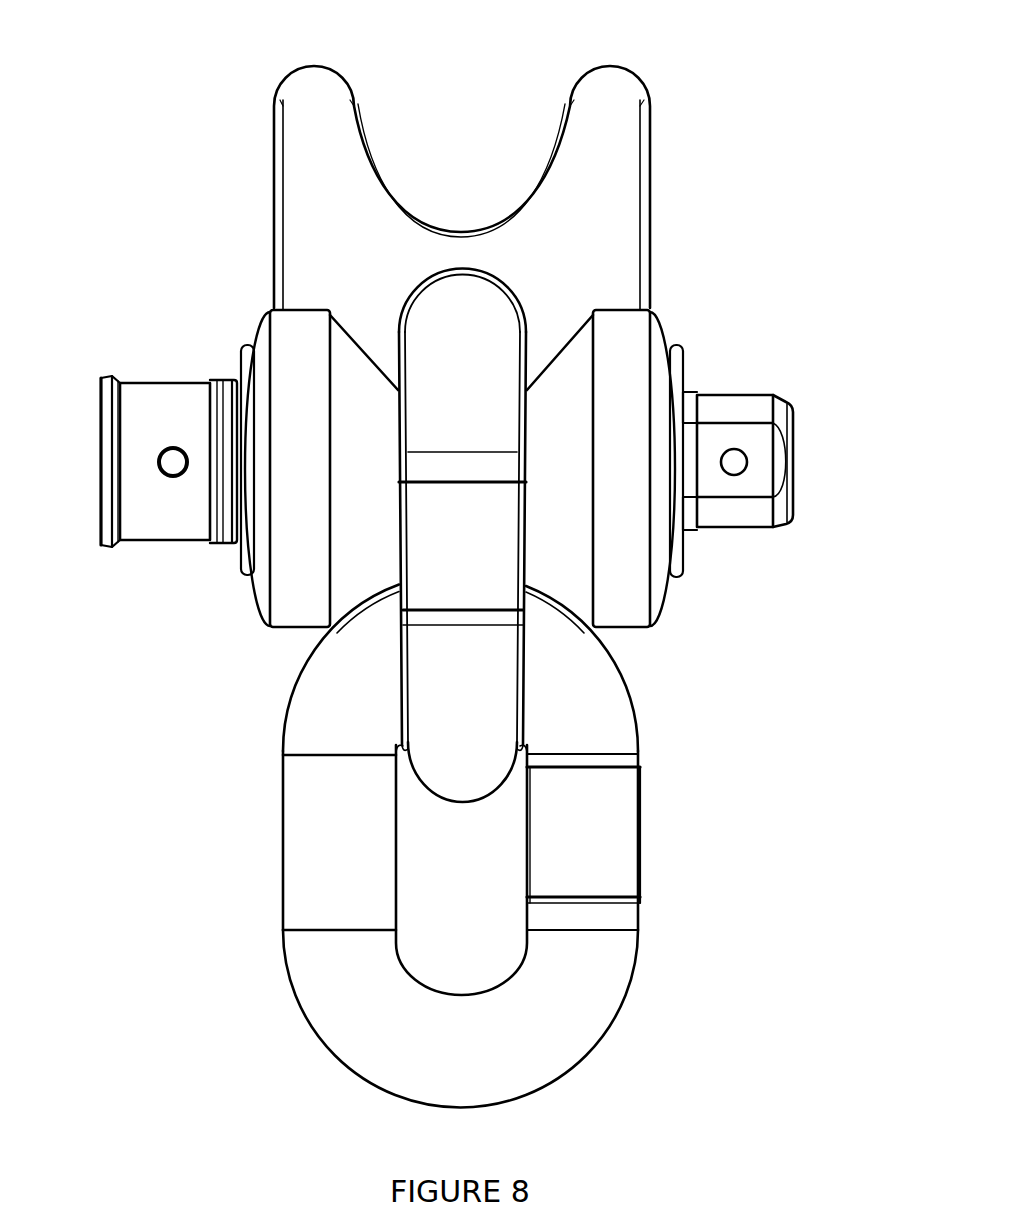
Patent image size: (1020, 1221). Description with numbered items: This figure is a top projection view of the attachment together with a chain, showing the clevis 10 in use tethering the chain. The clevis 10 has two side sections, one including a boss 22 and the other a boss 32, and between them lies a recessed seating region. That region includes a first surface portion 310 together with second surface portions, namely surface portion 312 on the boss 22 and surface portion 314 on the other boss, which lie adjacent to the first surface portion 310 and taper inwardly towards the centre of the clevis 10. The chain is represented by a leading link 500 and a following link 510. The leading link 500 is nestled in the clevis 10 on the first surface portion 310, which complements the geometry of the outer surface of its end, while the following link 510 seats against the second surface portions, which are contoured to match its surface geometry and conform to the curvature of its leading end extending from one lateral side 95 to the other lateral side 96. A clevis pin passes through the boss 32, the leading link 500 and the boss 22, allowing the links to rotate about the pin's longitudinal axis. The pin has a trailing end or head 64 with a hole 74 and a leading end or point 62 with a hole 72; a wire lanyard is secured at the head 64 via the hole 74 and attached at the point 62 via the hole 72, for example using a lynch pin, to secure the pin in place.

The clevis 10 is at (620, 152).
The boss 22 is at (632, 565).
The boss 32 is at (298, 593).
The point 62 is at (742, 392).
The head 64 is at (171, 546).
The hole 72 is at (794, 470).
The hole 74 is at (175, 447).
The lateral side 95 is at (285, 720).
The lateral side 96 is at (625, 683).
The first surface portion 310 is at (463, 265).
The surface portion 312 is at (562, 558).
The surface portion 314 is at (358, 567).
The leading link 500 is at (458, 727).
The following link 510 is at (337, 1022).